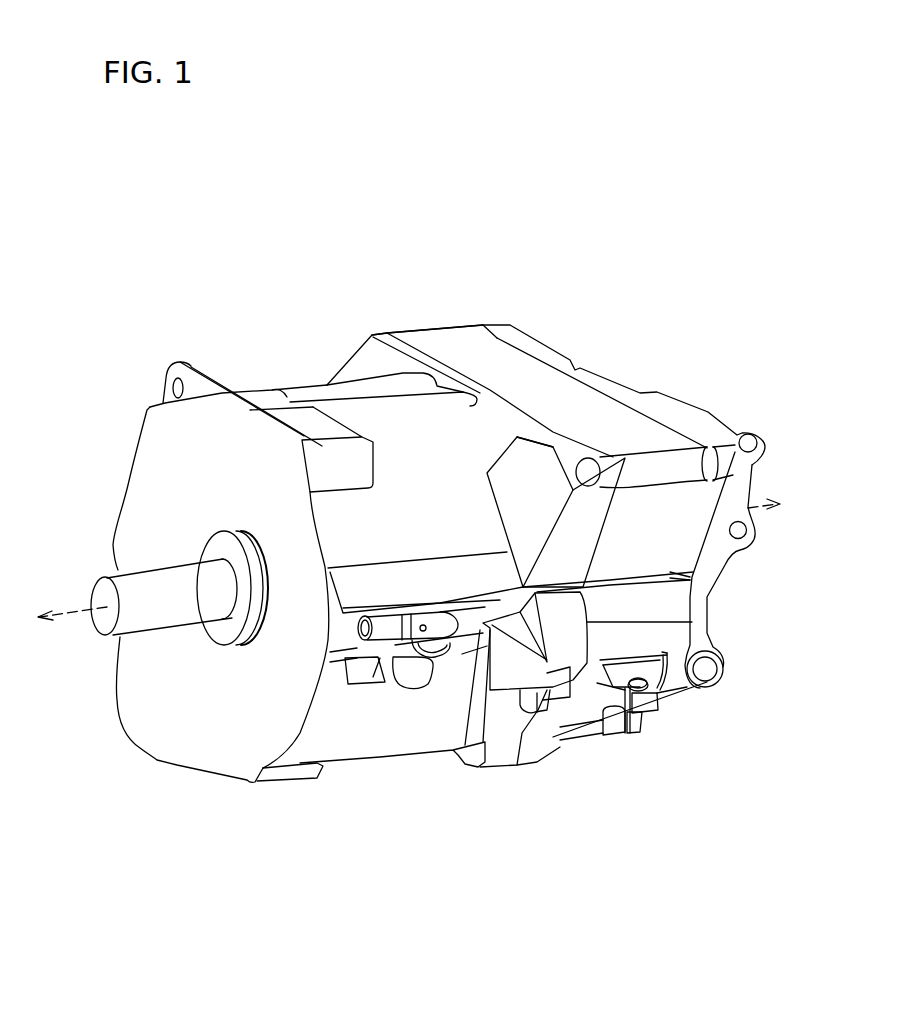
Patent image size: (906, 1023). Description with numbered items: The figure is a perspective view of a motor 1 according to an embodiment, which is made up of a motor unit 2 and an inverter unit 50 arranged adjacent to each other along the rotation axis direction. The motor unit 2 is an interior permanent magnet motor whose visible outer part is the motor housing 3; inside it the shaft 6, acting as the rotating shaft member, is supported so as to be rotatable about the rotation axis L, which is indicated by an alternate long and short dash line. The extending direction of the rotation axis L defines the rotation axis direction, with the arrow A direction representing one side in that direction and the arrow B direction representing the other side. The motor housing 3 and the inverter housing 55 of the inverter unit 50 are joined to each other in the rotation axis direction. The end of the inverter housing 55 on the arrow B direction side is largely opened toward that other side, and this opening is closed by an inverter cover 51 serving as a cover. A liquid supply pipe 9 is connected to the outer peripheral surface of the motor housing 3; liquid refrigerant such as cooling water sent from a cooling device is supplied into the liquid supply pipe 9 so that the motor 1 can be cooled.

The motor 1 is at (665, 308).
The motor unit 2 is at (378, 286).
The motor housing 3 is at (412, 758).
The shaft 6 is at (123, 636).
The liquid supply pipe 9 is at (368, 642).
The inverter unit 50 is at (667, 240).
The inverter cover 51 is at (525, 326).
The inverter housing 55 is at (437, 330).
The rotation axis L is at (67, 613).
The arrow A direction A is at (36, 619).
The arrow B direction B is at (775, 505).